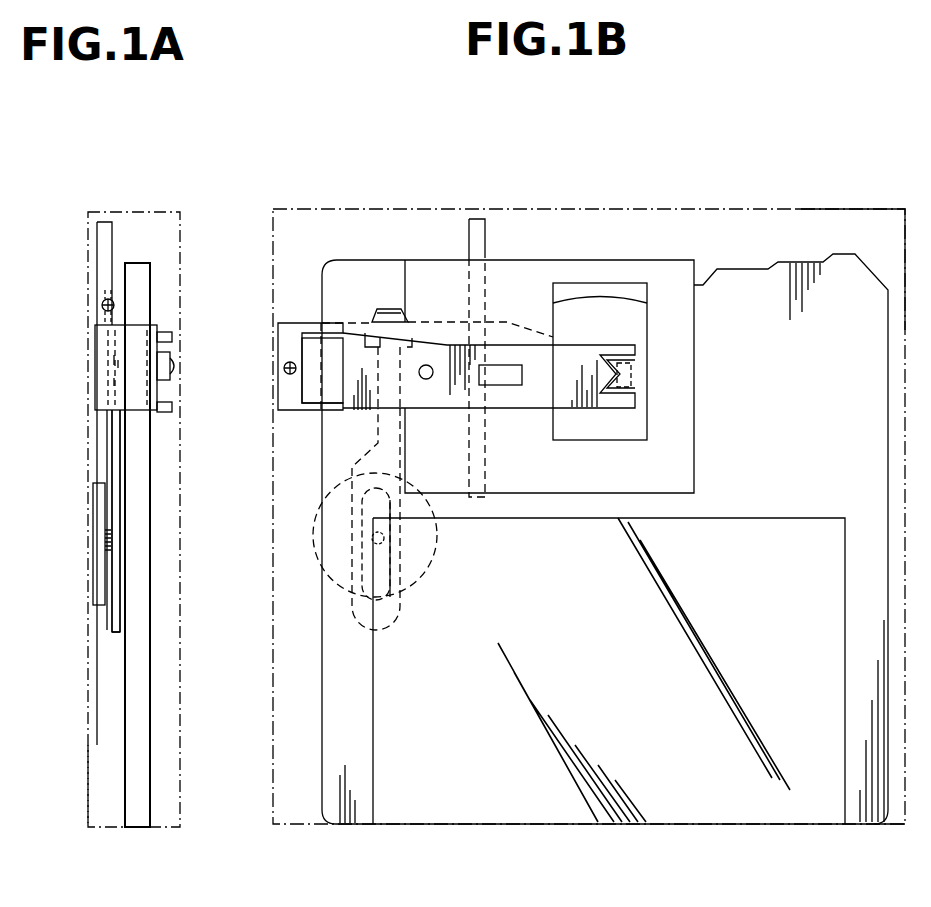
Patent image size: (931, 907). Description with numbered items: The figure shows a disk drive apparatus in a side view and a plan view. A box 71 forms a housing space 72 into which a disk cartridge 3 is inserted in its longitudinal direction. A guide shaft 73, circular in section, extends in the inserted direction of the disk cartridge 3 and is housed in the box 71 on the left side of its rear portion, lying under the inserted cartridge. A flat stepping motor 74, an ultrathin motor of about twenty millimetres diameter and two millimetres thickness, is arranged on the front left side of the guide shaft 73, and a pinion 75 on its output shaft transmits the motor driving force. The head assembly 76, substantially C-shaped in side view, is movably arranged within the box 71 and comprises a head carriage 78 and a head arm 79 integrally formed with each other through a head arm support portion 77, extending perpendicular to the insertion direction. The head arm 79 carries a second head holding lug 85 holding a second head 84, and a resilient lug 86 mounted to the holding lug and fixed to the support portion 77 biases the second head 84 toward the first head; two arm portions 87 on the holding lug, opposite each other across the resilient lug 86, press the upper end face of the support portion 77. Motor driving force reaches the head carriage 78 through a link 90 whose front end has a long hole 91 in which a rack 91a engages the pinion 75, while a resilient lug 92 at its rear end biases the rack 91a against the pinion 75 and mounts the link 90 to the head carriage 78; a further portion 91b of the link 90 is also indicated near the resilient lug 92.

In FIG. 1A, the disk cartridge 3 is at (135, 693).
In FIG. 1B, the disk cartridge 3 is at (838, 278).
In FIG. 1A, the box 71 is at (162, 211).
In FIG. 1B, the box 71 is at (780, 206).
In FIG. 1A, the housing space 72 is at (162, 250).
In FIG. 1B, the housing space 72 is at (643, 232).
In FIG. 1A, the guide shaft 73 is at (105, 235).
In FIG. 1B, the guide shaft 73 is at (483, 233).
In FIG. 1A, the flat stepping motor 74 is at (97, 512).
In FIG. 1B, the flat stepping motor 74 is at (325, 498).
In FIG. 1A, the pinion 75 is at (102, 542).
In FIG. 1B, the pinion 75 is at (390, 542).
In FIG. 1A, the head assembly 76 is at (80, 360).
In FIG. 1B, the head assembly 76 is at (338, 314).
In FIG. 1A, the head arm support portion 77 is at (98, 383).
In FIG. 1B, the head carriage 78 is at (497, 310).
In FIG. 1B, the head arm 79 is at (520, 343).
In FIG. 1B, the second head 84 is at (640, 377).
In FIG. 1B, the second head holding lug 85 is at (510, 388).
In FIG. 1A, the resilient lug 86 is at (168, 368).
In FIG. 1B, the resilient lug 86 is at (284, 370).
In FIG. 1A, the arm portions 87 is at (168, 335).
In FIG. 1B, the arm portions 87 is at (300, 330).
In FIG. 1A, the link 90 is at (110, 444).
In FIG. 1B, the link 90 is at (393, 622).
In FIG. 1B, the long hole 91 is at (363, 608).
In FIG. 1B, the rack 91a is at (387, 568).
In FIG. 1A, the slot end 91b is at (106, 300).
In FIG. 1A, the resilient lug 92 is at (102, 305).
In FIG. 1B, the resilient lug 92 is at (388, 316).